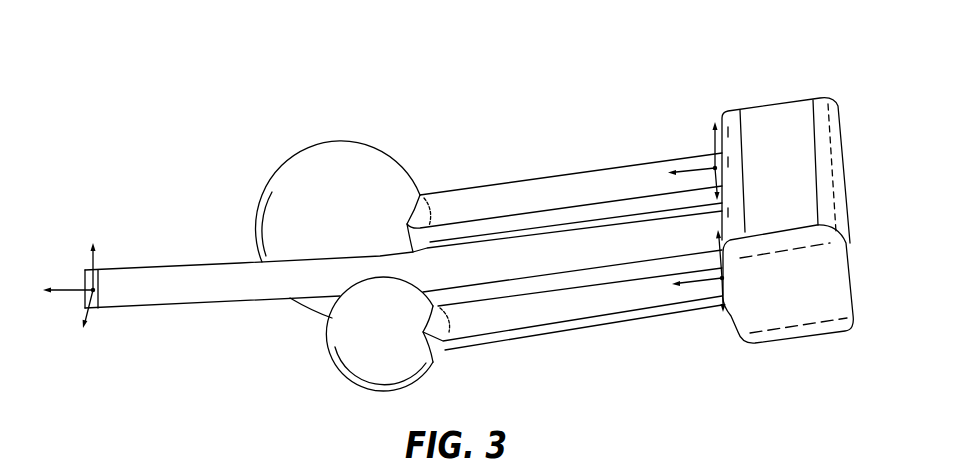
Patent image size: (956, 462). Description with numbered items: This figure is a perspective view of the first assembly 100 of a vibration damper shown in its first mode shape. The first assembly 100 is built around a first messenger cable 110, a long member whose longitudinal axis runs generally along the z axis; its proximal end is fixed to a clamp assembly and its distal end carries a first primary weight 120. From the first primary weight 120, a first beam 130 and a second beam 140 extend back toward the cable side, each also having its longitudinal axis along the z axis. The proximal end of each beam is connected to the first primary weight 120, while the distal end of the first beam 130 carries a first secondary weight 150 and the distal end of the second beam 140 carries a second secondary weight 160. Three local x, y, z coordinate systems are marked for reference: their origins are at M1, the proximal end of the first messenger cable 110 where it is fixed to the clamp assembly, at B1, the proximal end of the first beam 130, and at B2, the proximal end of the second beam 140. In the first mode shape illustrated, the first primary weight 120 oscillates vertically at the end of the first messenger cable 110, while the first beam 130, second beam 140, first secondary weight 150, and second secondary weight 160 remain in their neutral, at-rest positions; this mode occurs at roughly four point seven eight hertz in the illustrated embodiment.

The first assembly 100 is at (803, 81).
The first messenger cable 110 is at (183, 281).
The first primary weight 120 is at (770, 120).
The first beam 130 is at (548, 190).
The second beam 140 is at (563, 311).
The first secondary weight 150 is at (346, 168).
The second secondary weight 160 is at (363, 361).
The local coordinate origin at proximal end of first messenger cable M1 is at (97, 290).
The local coordinate origin at proximal end of first beam B1 is at (720, 168).
The local coordinate origin at proximal end of second beam B2 is at (725, 278).